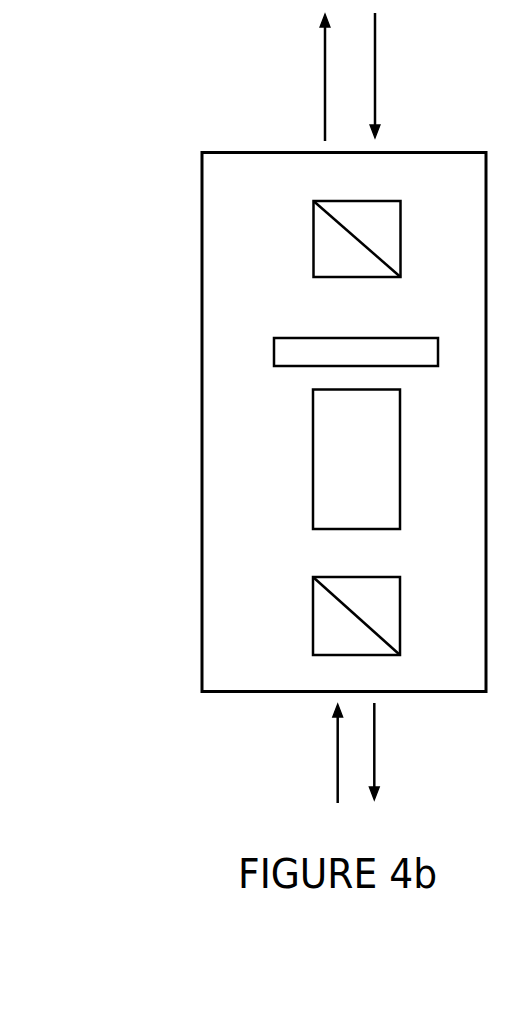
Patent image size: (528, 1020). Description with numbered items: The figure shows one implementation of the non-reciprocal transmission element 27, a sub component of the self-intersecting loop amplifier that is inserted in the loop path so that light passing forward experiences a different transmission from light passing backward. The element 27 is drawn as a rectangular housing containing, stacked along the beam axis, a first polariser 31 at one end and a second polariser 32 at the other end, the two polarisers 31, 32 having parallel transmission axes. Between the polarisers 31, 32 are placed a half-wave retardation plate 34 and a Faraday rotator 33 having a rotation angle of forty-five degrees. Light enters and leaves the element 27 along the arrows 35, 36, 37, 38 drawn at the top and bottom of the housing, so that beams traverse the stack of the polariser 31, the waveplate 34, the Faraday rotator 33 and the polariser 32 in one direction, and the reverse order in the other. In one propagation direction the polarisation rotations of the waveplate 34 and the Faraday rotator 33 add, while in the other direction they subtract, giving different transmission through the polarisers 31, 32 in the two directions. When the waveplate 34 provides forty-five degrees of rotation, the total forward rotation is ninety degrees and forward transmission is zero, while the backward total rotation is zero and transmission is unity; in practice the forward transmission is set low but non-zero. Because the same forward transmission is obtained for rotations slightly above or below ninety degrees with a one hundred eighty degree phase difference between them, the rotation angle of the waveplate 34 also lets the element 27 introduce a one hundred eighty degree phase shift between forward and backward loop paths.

The non-reciprocal transmission element 27 is at (221, 129).
The polariser 31 is at (299, 243).
The polariser 32 is at (301, 620).
The Faraday rotator 33 is at (301, 484).
The half-wave retardation plate 34 is at (258, 326).
The input beam 35 is at (309, 767).
The output beam 36 is at (299, 65).
The input beam 37 is at (401, 65).
The output beam 38 is at (403, 767).